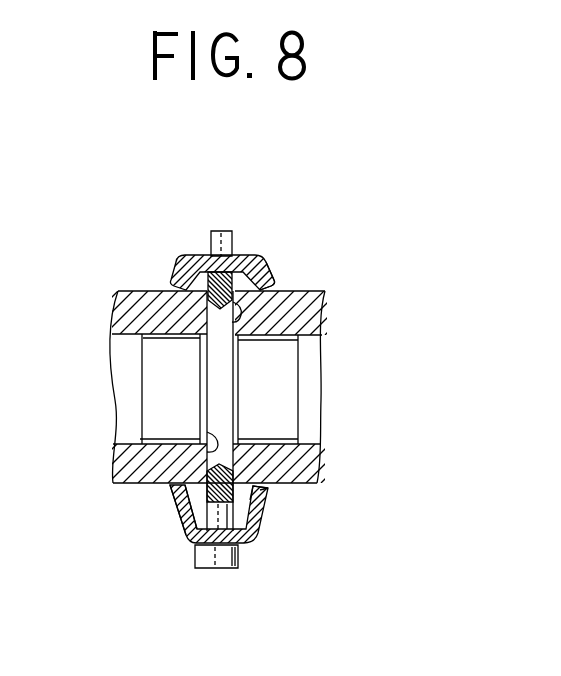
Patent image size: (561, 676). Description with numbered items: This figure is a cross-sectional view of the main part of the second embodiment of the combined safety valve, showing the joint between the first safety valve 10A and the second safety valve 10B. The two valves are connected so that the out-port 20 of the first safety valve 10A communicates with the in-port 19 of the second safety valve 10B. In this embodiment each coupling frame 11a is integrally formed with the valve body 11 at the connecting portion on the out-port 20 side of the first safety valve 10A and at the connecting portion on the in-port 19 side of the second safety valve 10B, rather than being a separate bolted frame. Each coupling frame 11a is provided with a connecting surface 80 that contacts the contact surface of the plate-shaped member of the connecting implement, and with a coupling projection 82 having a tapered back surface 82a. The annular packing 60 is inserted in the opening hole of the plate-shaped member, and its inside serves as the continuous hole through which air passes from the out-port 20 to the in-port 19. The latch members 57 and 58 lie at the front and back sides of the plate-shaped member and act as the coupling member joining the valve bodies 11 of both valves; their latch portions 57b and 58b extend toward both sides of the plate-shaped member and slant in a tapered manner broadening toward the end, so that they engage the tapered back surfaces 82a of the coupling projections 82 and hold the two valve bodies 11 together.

The first safety valve 10A is at (224, 300).
The second safety valve 10B is at (178, 217).
The valve body 11 is at (110, 492).
The coupling frame 11a is at (168, 312).
The in-port 19 is at (170, 377).
The out-port 20 is at (273, 362).
The latch member 57 is at (177, 554).
The latch portion 57b is at (175, 495).
The latch member 58 is at (197, 238).
The latch portion 58b is at (271, 283).
The annular packing 60 is at (217, 352).
The connecting surface 80 is at (235, 310).
The coupling projection 82 is at (248, 490).
The tapered back surface 82a is at (262, 490).